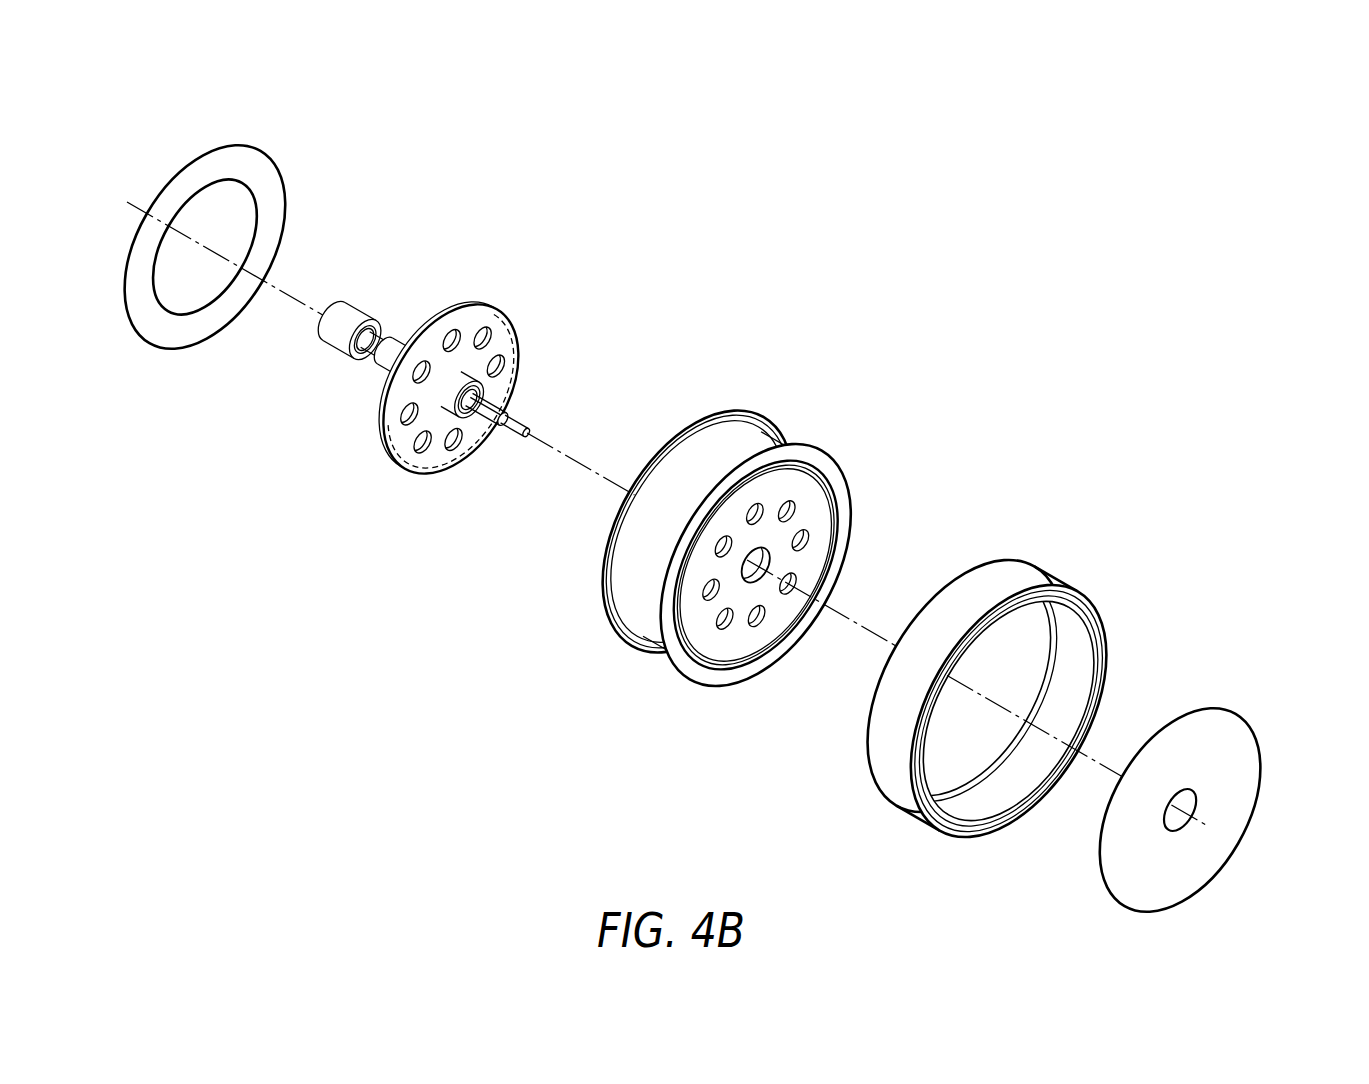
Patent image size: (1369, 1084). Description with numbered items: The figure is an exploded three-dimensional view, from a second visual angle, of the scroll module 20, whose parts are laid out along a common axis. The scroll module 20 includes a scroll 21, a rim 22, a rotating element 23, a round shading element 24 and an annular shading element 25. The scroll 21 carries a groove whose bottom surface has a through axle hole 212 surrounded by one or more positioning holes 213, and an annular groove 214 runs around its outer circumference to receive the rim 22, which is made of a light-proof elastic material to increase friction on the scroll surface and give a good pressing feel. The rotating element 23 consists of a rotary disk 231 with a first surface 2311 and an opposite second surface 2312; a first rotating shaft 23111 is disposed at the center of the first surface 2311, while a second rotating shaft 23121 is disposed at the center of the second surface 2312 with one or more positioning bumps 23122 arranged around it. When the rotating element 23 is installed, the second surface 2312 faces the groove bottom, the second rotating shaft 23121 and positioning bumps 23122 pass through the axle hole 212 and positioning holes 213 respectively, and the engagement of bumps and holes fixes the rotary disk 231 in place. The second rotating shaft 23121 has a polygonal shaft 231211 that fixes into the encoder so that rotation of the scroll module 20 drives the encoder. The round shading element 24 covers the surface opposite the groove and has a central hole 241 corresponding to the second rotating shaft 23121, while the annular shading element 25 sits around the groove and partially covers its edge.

The scroll module 20 is at (107, 77).
The scroll 21 is at (737, 543).
The axle hole 212 is at (755, 557).
The positioning holes 213 is at (753, 620).
The annular groove 214 is at (733, 455).
The rim 22 is at (1025, 577).
The rotating element 23 is at (430, 382).
The rotary disk 231 is at (447, 382).
The first surface 2311 is at (403, 443).
The first rotating shaft 23111 is at (373, 352).
The second surface 2312 is at (483, 318).
The second rotating shaft 23121 is at (538, 429).
The polygonal shaft 231211 is at (513, 410).
The positioning bumps 23122 is at (430, 450).
The round shading element 24 is at (1199, 805).
The central hole 241 is at (1192, 807).
The annular shading element 25 is at (229, 160).